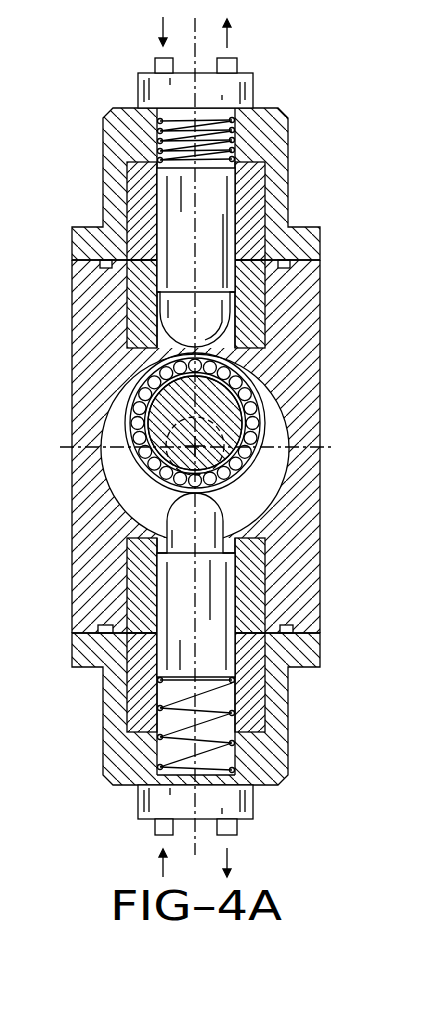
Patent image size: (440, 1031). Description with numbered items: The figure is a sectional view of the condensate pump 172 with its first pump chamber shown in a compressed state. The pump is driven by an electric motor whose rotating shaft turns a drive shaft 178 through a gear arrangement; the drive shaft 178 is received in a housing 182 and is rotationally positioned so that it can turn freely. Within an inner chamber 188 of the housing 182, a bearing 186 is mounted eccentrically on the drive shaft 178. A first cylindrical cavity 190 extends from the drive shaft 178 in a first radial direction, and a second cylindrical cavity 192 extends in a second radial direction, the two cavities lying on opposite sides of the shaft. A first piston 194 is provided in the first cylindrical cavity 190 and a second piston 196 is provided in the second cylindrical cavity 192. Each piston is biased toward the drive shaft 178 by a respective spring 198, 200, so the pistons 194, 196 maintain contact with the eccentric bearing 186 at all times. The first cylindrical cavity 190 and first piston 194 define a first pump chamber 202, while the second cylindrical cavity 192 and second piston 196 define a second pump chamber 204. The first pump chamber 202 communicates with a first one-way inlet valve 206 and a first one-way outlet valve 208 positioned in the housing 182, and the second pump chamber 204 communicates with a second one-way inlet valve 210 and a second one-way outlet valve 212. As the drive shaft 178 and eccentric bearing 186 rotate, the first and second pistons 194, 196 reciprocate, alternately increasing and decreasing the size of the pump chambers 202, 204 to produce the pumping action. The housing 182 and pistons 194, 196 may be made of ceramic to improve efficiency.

The condensate pump 172 is at (292, 84).
The drive shaft 178 is at (213, 432).
The housing 182 is at (322, 277).
The bearing 186 is at (132, 418).
The inner chamber 188 is at (271, 483).
The first cylindrical cavity 190 is at (155, 312).
The second cylindrical cavity 192 is at (157, 549).
The first piston 194 is at (222, 210).
The second piston 196 is at (222, 597).
The spring 198 is at (233, 137).
The spring 200 is at (233, 772).
The first pump chamber 202 is at (148, 135).
The second pump chamber 204 is at (157, 750).
The first one-way inlet valve 206 is at (156, 63).
The first one-way outlet valve 208 is at (236, 63).
The second one-way inlet valve 210 is at (156, 828).
The second one-way outlet valve 212 is at (236, 828).